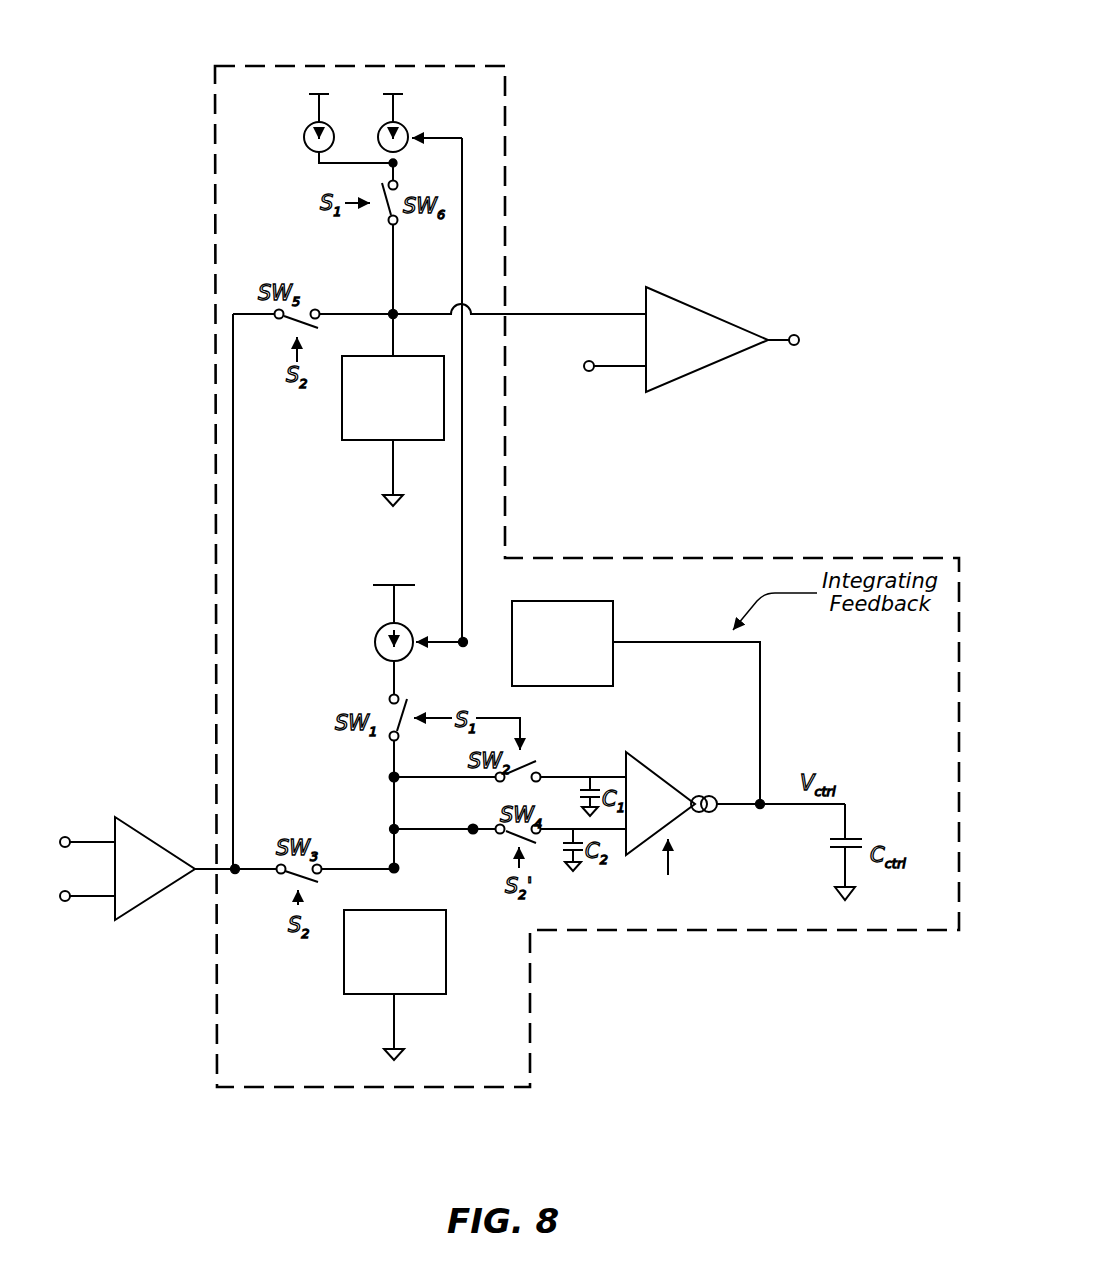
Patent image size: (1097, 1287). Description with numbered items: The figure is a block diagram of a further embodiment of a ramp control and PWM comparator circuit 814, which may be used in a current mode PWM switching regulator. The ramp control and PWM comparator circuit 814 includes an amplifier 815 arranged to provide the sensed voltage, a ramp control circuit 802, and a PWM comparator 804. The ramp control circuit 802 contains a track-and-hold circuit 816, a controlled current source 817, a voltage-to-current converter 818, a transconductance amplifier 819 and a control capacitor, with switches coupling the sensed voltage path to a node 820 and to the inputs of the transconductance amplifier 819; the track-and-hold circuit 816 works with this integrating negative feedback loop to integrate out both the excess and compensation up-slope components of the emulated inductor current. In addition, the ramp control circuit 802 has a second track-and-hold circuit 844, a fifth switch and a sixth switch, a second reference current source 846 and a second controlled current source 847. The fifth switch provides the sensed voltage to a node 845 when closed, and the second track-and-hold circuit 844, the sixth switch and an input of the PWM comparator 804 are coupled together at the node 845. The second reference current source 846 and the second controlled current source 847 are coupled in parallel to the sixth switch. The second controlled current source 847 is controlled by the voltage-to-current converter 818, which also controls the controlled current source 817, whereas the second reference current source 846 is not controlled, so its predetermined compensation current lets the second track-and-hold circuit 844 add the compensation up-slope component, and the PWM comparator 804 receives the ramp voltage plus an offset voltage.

The ramp control circuit 802 is at (508, 1090).
The PWM comparator 804 is at (718, 358).
The ramp control and PWM comparator circuit 814 is at (770, 58).
The amplifier 815 is at (128, 918).
The track-and-hold circuit 816 is at (368, 996).
The controlled current source 817 is at (377, 653).
The voltage-to-current converter 818 is at (615, 686).
The transconductance amplifier 819 is at (694, 812).
The node N820 820 is at (390, 826).
The second track-and-hold circuit 844 is at (368, 443).
The node N845 845 is at (390, 310).
The second reference current source 846 is at (310, 150).
The second controlled current source 847 is at (404, 126).